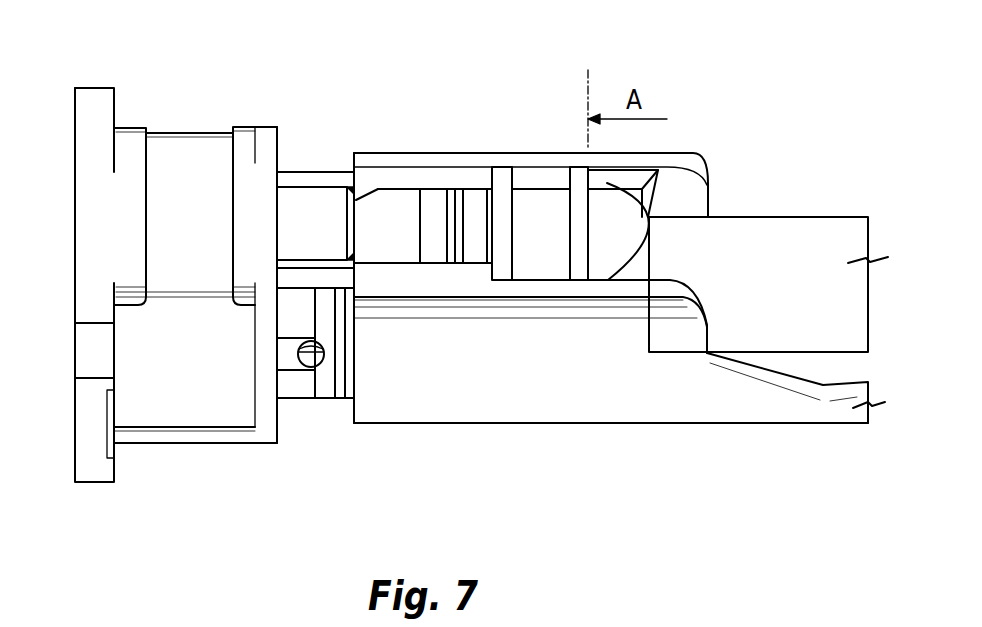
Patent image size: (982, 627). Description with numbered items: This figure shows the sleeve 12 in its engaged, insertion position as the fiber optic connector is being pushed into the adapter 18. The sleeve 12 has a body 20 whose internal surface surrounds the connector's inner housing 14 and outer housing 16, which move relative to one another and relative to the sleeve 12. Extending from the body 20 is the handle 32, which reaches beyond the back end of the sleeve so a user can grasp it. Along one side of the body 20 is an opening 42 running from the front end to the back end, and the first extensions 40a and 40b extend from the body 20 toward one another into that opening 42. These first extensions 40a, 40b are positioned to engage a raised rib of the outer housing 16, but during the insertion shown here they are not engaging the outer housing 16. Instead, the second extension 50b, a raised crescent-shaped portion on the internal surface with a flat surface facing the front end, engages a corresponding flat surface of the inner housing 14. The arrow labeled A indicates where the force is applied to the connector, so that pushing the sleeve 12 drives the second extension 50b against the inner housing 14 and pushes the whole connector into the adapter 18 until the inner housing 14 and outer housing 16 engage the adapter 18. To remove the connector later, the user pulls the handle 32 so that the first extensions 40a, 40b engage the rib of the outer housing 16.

The sleeve 12 is at (720, 192).
The inner housing 14 is at (581, 268).
The outer housing 16 is at (328, 172).
The adapter 18 is at (263, 123).
The body 20 is at (432, 423).
The handle 32 is at (845, 424).
The first extension 40a is at (455, 272).
The first extension 40b is at (393, 172).
The opening 42 is at (435, 203).
The second extension 50b is at (607, 177).